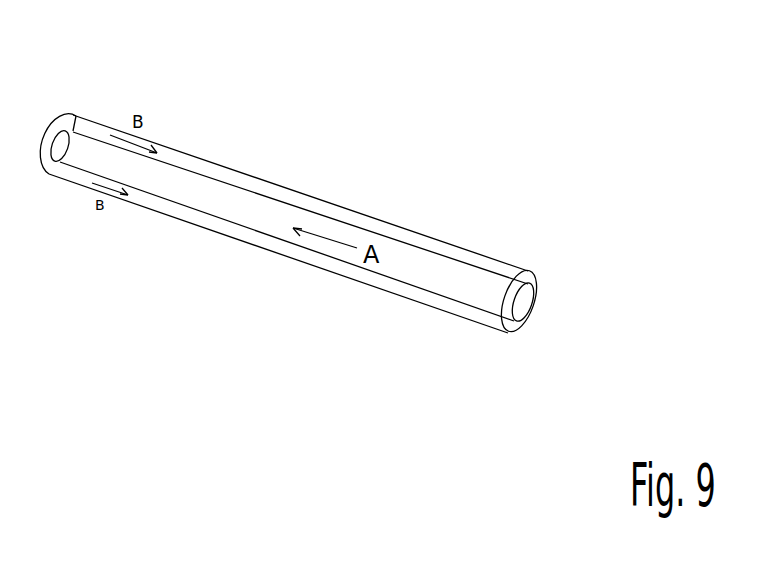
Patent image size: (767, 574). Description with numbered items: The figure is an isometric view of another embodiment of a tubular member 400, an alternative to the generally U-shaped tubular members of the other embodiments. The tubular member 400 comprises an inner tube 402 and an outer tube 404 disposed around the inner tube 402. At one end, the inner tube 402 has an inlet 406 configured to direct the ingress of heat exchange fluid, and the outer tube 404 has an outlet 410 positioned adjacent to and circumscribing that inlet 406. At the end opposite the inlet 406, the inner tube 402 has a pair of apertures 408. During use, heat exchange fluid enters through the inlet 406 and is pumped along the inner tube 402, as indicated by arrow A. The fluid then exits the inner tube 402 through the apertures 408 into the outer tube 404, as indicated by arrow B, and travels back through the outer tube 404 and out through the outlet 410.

The tubular member 400 is at (549, 182).
The inner tube 402 is at (457, 290).
The outer tube 404 is at (218, 227).
The inlet 406 is at (531, 302).
The apertures 408 is at (84, 133).
The outlet 410 is at (508, 333).